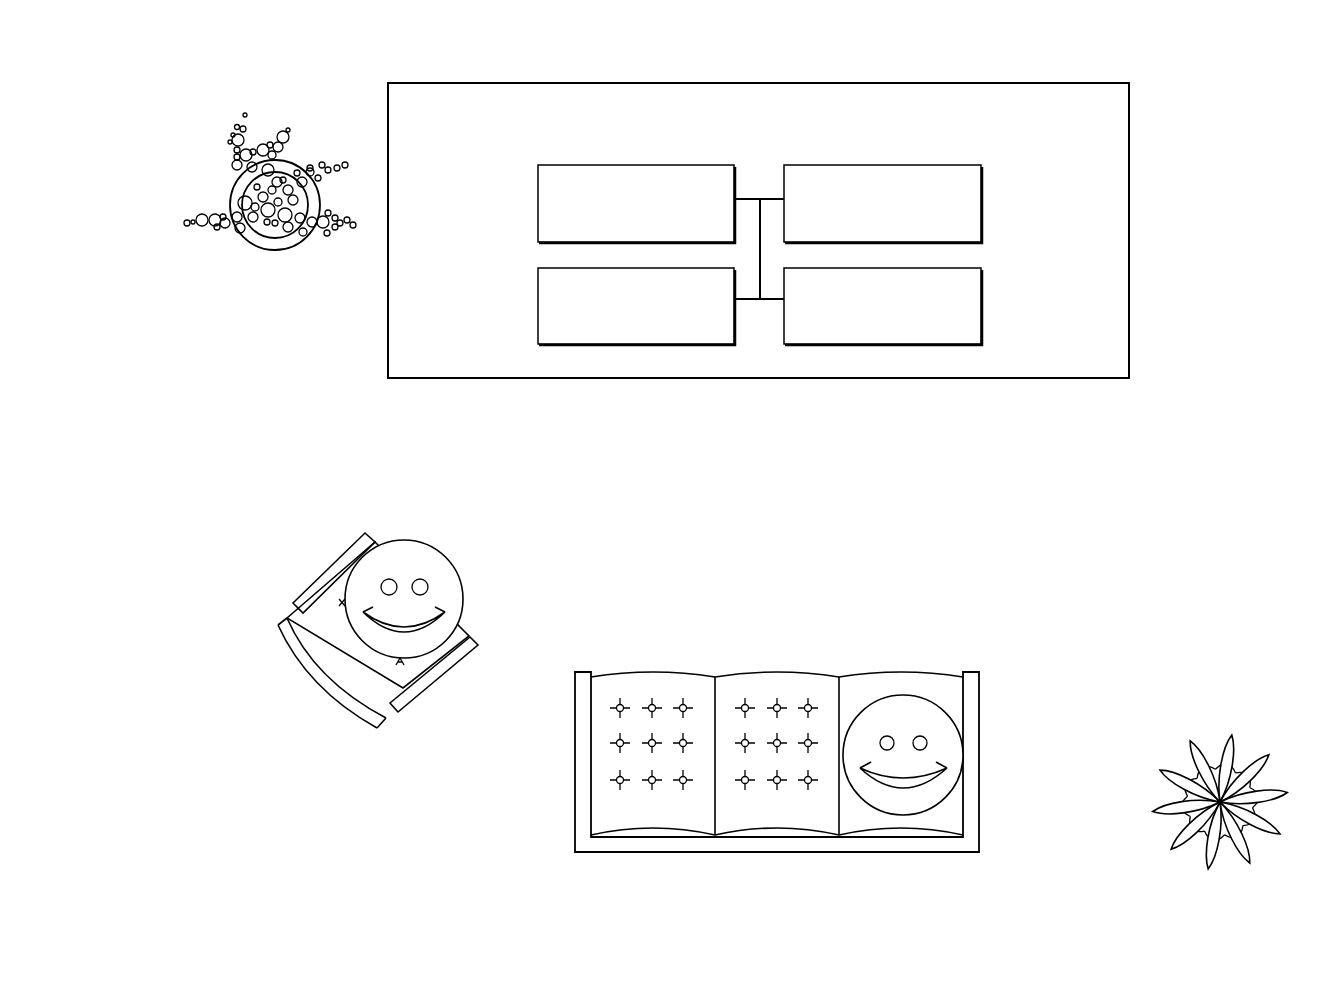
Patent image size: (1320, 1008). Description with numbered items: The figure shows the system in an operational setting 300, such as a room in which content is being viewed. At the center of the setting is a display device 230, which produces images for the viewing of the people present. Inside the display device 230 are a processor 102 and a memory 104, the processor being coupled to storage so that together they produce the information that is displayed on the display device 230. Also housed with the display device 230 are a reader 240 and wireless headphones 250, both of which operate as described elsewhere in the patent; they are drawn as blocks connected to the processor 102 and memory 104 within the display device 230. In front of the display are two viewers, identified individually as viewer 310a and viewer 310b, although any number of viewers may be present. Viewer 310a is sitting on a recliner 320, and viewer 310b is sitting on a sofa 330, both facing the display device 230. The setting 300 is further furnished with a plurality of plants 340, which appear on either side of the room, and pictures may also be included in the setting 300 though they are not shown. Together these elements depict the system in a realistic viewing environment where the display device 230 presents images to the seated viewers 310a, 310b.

The operational setting 300 is at (1279, 97).
The display device 230 is at (1087, 127).
The wireless headphones 250 is at (656, 227).
The processor 102 is at (902, 227).
The reader 240 is at (656, 328).
The memory 104 is at (902, 328).
The plants 340 is at (222, 182).
The recliner 320 is at (322, 555).
The viewer 310a is at (437, 574).
The sofa 330 is at (980, 695).
The viewer 310b is at (872, 703).